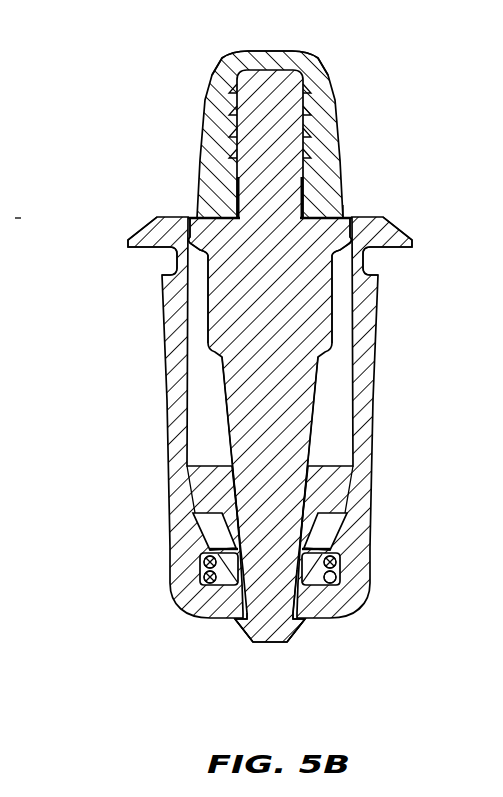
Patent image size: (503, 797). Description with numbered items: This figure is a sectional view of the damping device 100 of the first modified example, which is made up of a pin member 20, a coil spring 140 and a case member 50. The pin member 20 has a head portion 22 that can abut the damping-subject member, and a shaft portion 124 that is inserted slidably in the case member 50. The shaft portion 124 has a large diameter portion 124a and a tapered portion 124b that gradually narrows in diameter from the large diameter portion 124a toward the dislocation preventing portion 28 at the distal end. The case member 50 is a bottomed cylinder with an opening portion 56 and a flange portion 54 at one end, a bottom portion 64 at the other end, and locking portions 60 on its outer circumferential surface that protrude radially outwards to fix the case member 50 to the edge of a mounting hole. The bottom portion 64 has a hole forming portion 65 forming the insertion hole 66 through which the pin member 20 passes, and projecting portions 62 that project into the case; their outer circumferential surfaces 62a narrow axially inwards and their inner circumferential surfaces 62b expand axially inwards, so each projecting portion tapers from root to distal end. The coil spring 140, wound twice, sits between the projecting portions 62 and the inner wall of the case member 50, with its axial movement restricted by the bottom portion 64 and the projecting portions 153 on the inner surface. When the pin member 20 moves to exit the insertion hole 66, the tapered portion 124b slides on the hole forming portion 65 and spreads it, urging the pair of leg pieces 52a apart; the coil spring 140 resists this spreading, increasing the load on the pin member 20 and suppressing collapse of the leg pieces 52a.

The pin member 20 is at (204, 118).
The head portion 22 is at (270, 52).
The dislocation preventing portion 28 is at (243, 627).
The case member 50 is at (167, 371).
The leg pieces 52a is at (183, 565).
The flange portion 54 is at (393, 220).
The opening portion 56 is at (351, 217).
The locking portions 60 is at (161, 283).
The projecting portions 62 is at (230, 591).
The outer circumferential surfaces of the projecting portions 62a is at (207, 568).
The inner circumferential surfaces of the projecting portions 62b is at (207, 616).
The bottom portion 64 is at (317, 620).
The hole forming portion 65 is at (300, 588).
The insertion hole 66 is at (272, 592).
The damping device 100 is at (337, 679).
The shaft portion 124 is at (289, 382).
The large diameter portion 124a is at (337, 303).
The tapered portion 124b is at (305, 404).
The coil spring 140 is at (340, 578).
The projecting portions 153 is at (210, 550).